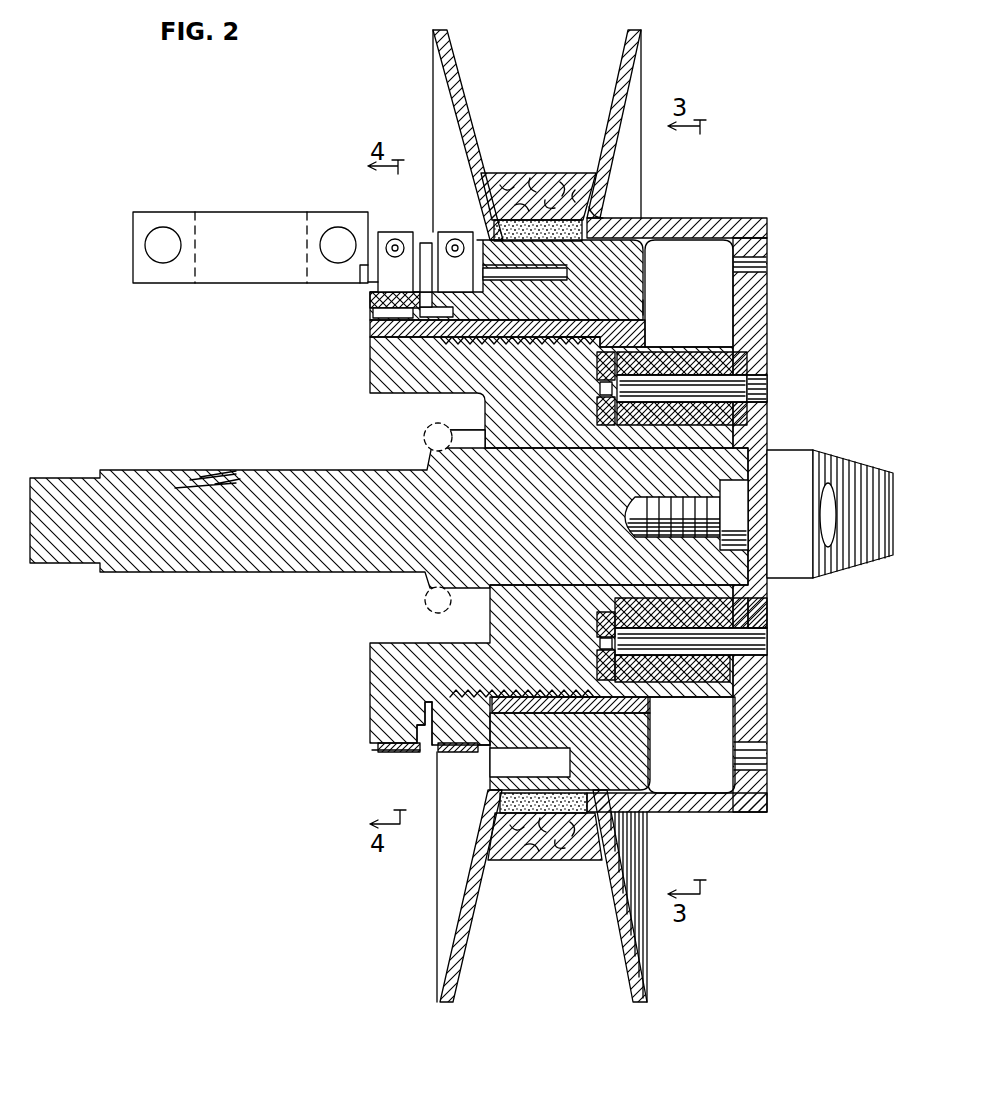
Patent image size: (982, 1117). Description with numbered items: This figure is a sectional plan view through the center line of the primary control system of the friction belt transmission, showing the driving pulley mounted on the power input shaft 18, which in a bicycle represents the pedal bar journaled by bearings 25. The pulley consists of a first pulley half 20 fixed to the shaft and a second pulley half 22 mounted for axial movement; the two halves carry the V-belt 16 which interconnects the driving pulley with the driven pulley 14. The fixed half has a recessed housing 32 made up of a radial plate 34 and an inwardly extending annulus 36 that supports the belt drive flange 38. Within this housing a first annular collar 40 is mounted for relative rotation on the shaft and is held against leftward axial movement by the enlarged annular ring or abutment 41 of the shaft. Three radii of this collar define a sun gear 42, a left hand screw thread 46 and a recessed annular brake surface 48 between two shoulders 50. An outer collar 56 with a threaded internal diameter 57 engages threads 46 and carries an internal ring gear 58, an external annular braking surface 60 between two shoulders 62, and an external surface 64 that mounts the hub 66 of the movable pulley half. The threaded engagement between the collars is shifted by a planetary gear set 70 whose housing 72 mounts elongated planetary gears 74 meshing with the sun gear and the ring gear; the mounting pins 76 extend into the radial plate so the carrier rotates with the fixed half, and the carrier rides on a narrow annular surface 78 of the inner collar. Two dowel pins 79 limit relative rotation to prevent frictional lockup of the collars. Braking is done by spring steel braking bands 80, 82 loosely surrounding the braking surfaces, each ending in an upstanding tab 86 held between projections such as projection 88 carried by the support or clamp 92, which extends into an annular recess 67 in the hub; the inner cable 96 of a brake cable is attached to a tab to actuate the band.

The driven pulley 14 is at (559, 173).
The V-belt 16 is at (543, 862).
The power input shaft 18 is at (371, 531).
The first pulley half 20 is at (640, 66).
The second pulley half 22 is at (456, 64).
The bearings 25 is at (426, 602).
The recessed housing 32 is at (714, 274).
The radial plate 34 is at (760, 327).
The inwardly extending annulus 36 is at (698, 216).
The belt drive flange 38 is at (640, 168).
The first annular collar 40 is at (552, 416).
The enlarged annular ring or abutment 41 is at (462, 428).
The sun gear 42 is at (645, 433).
The left hand screw thread 46 is at (493, 341).
The recessed annular brake surface 48 is at (399, 741).
The shoulders 50 is at (376, 750).
The outer collar 56 is at (590, 322).
The threaded internal diameter 57 is at (546, 340).
The internal ring gear 58 is at (646, 338).
The annular braking surface 60 is at (455, 743).
The shoulders 62 is at (436, 756).
The external surface 64 is at (647, 308).
The hub 66 is at (638, 271).
The annular recess 67 is at (562, 266).
The planetary gear set 70 is at (752, 418).
The housing 72 is at (748, 421).
The planetary gears 74 is at (750, 400).
The mounting pins 76 is at (737, 378).
The narrow annular surface 78 is at (600, 442).
The dowel pins 79 is at (382, 330).
The braking band 80 is at (385, 742).
The braking band 82 is at (486, 742).
The upstanding tab 86 is at (458, 236).
The projection 88 is at (540, 281).
The support or clamp 92 is at (262, 254).
The inner cable 96 is at (397, 245).